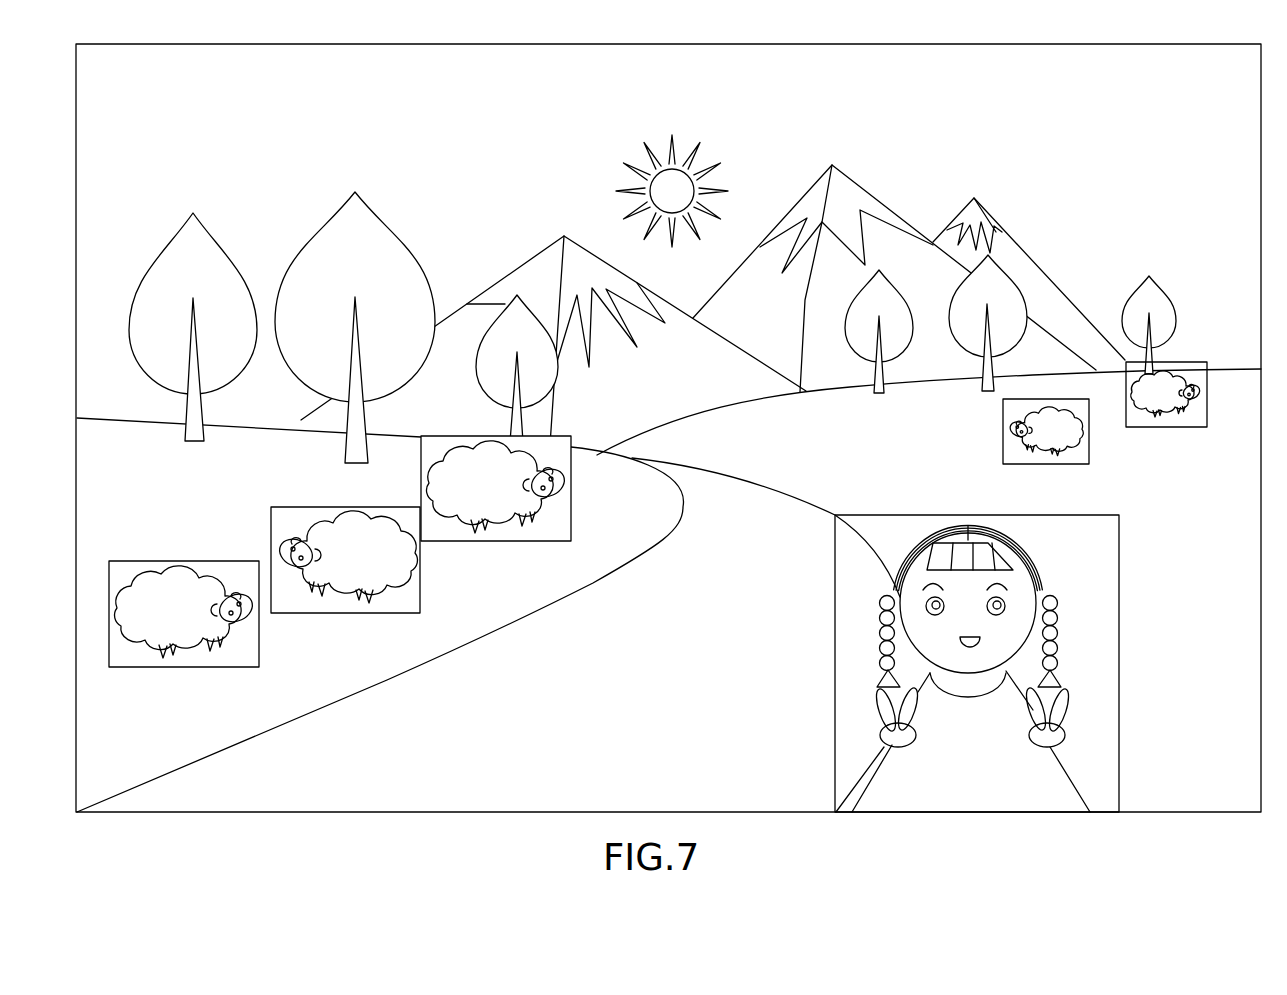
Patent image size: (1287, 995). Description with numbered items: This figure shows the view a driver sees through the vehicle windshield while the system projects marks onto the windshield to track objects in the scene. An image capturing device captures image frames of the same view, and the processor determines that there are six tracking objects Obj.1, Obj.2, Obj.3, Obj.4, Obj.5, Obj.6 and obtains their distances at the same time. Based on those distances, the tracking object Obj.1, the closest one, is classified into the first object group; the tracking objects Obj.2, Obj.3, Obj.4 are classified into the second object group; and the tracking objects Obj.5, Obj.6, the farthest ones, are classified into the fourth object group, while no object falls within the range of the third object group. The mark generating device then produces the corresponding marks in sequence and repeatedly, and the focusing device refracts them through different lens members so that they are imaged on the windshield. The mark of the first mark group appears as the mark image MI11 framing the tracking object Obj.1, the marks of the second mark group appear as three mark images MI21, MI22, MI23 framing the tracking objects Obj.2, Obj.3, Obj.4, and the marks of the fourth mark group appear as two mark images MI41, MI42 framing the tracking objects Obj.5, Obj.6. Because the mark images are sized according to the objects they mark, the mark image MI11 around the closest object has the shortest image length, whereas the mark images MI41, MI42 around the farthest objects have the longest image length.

The mark image of the first mark group MI11 is at (1030, 515).
The mark image of the second mark group MI21 is at (185, 561).
The mark image of the second mark group MI22 is at (333, 507).
The mark image of the second mark group MI23 is at (572, 472).
The mark image of the fourth mark group MI41 is at (1003, 425).
The mark image of the fourth mark group MI42 is at (1207, 380).
The tracking object Obj.1 is at (1047, 770).
The tracking object Obj.2 is at (158, 620).
The tracking object Obj.3 is at (343, 568).
The tracking object Obj.4 is at (482, 505).
The tracking object Obj.5 is at (1040, 437).
The tracking object Obj.6 is at (1152, 408).